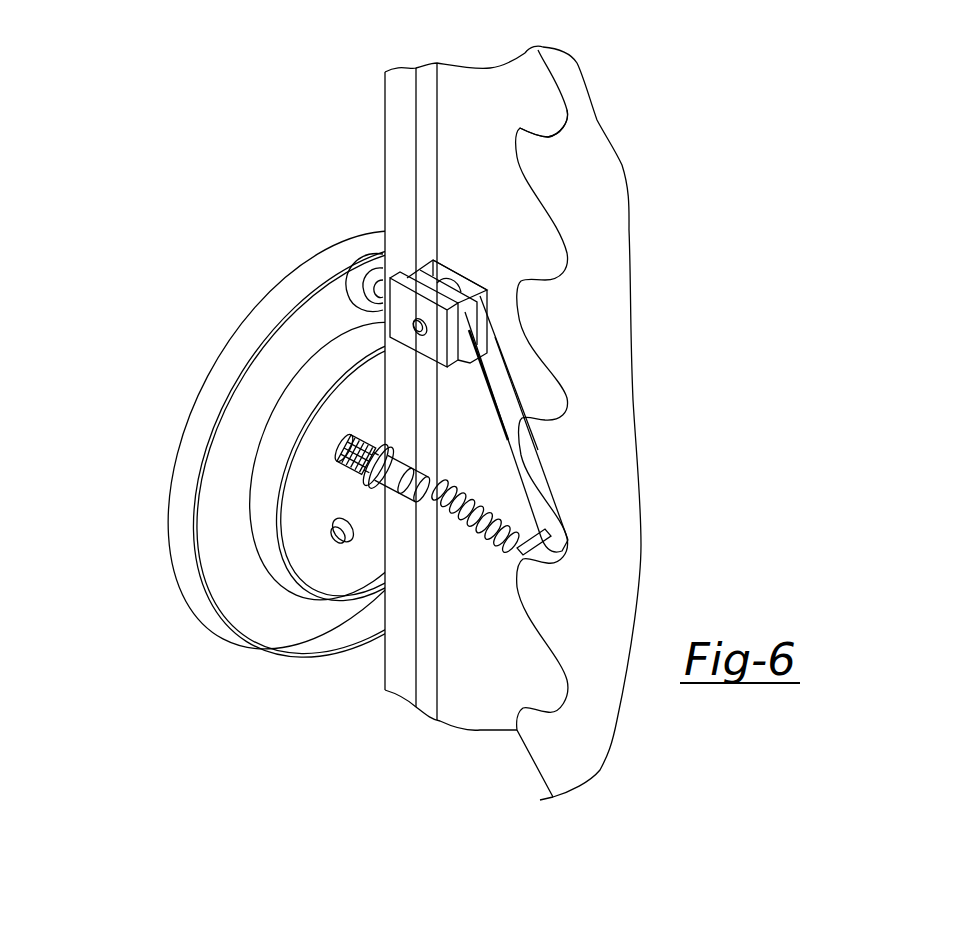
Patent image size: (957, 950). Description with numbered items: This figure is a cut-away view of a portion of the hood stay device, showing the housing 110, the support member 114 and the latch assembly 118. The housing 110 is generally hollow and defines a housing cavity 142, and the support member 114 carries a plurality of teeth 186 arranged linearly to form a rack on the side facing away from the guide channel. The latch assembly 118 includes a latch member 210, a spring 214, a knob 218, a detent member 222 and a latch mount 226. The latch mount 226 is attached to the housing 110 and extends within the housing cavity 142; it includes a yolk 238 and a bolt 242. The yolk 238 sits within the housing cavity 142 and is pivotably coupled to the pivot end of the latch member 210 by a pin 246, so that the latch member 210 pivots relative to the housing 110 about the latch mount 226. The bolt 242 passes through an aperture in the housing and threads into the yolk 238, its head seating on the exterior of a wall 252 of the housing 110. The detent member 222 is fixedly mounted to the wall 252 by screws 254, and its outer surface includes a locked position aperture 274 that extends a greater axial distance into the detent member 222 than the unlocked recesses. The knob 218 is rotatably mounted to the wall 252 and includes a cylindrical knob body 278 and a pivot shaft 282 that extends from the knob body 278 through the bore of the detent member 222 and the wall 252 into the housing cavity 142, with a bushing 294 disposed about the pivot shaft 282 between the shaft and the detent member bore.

The housing 110 is at (448, 83).
The support member 114 is at (597, 170).
The latch assembly 118 is at (256, 250).
The housing cavity 142 is at (473, 703).
The teeth 186 is at (518, 128).
The latch member 210 is at (505, 387).
The spring 214 is at (477, 547).
The knob 218 is at (210, 393).
The detent member 222 is at (271, 546).
The latch mount 226 is at (458, 248).
The yolk 238 is at (467, 281).
The bolt 242 is at (367, 263).
The pin 246 is at (413, 328).
The wall 252 is at (395, 90).
The screws 254 is at (343, 457).
The locked position aperture 274 is at (344, 547).
The knob body 278 is at (214, 556).
The pivot shaft 282 is at (447, 475).
The bushing 294 is at (377, 476).